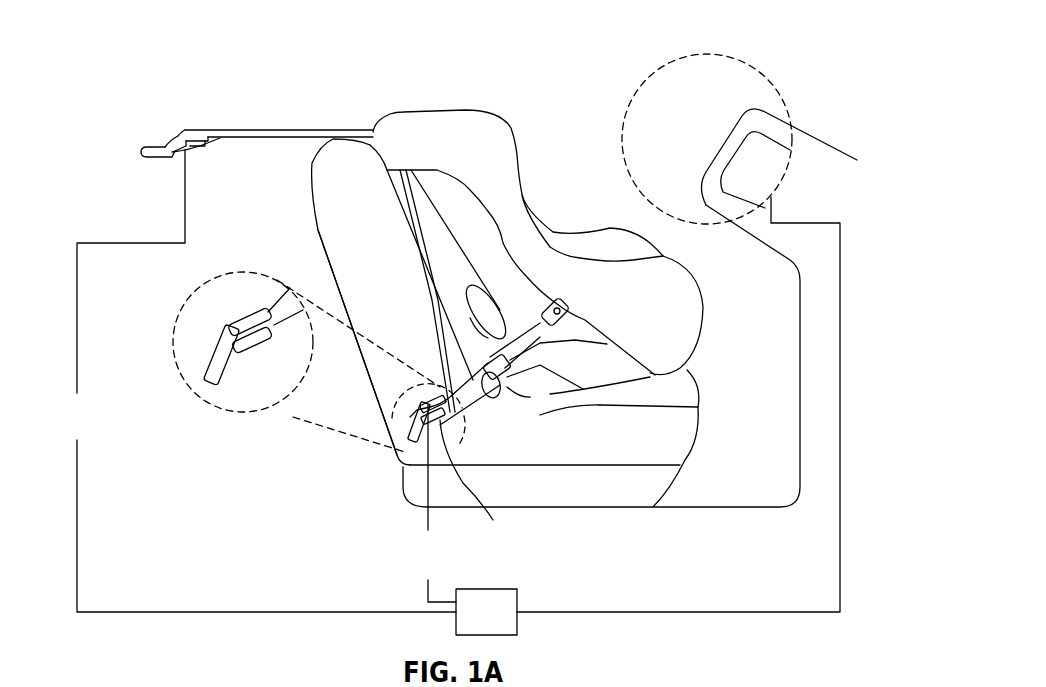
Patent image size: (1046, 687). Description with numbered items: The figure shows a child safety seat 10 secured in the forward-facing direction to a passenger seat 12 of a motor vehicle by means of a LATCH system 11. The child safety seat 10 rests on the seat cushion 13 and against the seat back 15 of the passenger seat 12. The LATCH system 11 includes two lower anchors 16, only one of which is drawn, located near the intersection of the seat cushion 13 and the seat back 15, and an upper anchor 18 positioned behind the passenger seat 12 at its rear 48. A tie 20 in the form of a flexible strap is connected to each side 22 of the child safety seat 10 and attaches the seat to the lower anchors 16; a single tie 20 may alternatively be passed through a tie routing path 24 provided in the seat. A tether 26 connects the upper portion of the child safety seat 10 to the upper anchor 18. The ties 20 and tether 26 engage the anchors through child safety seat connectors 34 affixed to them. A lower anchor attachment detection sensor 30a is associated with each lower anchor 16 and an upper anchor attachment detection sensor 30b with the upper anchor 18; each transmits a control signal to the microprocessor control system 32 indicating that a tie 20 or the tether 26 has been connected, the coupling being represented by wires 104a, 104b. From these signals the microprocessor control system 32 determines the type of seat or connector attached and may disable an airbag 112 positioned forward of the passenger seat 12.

The child safety seat 10 is at (518, 133).
The LATCH system 11 is at (196, 47).
The passenger seat 12 is at (700, 413).
The seat cushion 13 is at (665, 438).
The seat back 15 is at (337, 218).
The lower anchor 16 is at (243, 357).
The upper anchor 18 is at (160, 143).
The tie 20 is at (513, 358).
The side 22 is at (583, 380).
The tie routing path 24 is at (490, 317).
The tether 26 is at (237, 128).
The lower anchor attachment detection sensor 30a is at (253, 355).
The upper anchor attachment detection sensor 30b is at (187, 157).
The microprocessor control system 32 is at (474, 625).
The child safety seat connector 34 is at (185, 130).
The rear of the passenger seat 48 is at (330, 253).
The wire 104a is at (51, 434).
The wire 104b is at (401, 575).
The airbag 112 is at (773, 170).